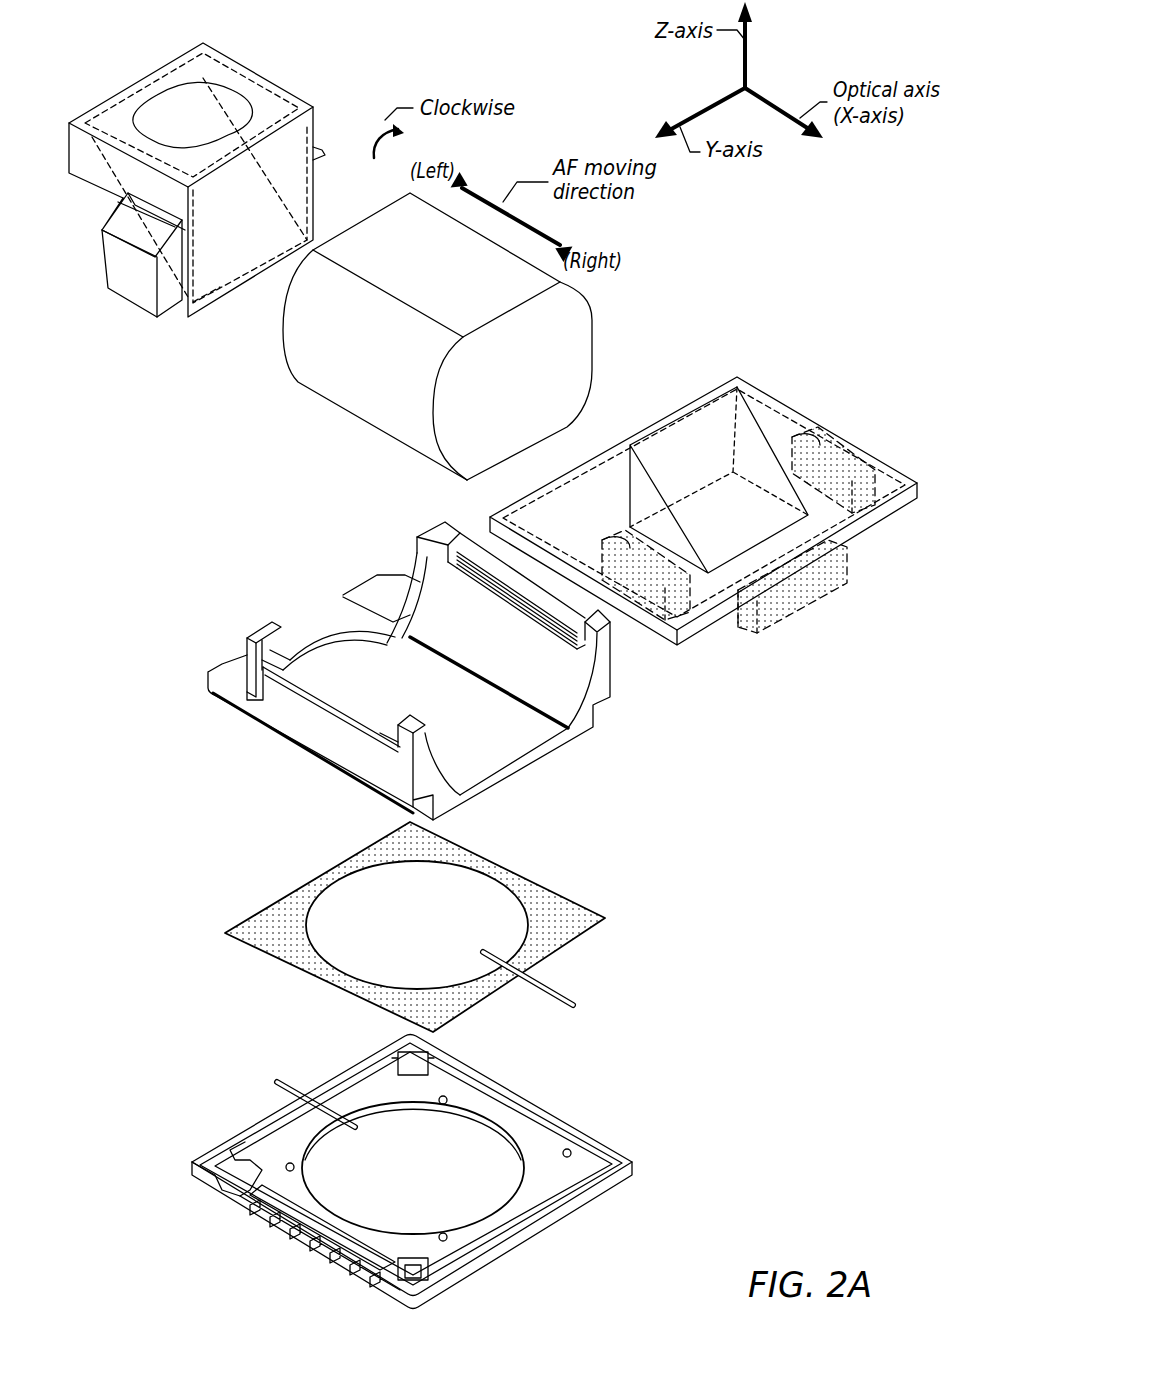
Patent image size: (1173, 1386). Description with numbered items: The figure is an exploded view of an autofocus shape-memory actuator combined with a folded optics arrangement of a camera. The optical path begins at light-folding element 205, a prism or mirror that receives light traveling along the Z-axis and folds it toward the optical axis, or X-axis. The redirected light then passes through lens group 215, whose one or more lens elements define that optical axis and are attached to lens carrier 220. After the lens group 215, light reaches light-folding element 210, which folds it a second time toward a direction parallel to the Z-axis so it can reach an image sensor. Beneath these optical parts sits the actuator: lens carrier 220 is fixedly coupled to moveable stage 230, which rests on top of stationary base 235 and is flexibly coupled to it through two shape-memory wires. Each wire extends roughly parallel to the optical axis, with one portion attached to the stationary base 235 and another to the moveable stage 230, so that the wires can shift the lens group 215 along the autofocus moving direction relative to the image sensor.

The light-folding element 205 is at (210, 63).
The light-folding element 210 is at (750, 415).
The lens group 215 is at (335, 410).
The lens carrier 220 is at (580, 718).
The moveable stage 230 is at (315, 878).
The stationary base 235 is at (610, 1143).